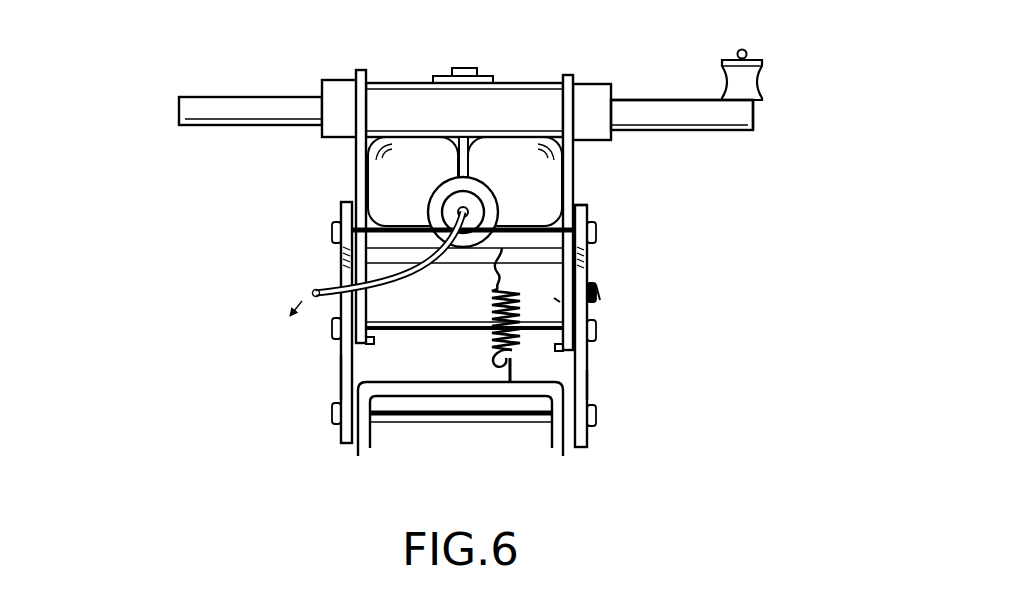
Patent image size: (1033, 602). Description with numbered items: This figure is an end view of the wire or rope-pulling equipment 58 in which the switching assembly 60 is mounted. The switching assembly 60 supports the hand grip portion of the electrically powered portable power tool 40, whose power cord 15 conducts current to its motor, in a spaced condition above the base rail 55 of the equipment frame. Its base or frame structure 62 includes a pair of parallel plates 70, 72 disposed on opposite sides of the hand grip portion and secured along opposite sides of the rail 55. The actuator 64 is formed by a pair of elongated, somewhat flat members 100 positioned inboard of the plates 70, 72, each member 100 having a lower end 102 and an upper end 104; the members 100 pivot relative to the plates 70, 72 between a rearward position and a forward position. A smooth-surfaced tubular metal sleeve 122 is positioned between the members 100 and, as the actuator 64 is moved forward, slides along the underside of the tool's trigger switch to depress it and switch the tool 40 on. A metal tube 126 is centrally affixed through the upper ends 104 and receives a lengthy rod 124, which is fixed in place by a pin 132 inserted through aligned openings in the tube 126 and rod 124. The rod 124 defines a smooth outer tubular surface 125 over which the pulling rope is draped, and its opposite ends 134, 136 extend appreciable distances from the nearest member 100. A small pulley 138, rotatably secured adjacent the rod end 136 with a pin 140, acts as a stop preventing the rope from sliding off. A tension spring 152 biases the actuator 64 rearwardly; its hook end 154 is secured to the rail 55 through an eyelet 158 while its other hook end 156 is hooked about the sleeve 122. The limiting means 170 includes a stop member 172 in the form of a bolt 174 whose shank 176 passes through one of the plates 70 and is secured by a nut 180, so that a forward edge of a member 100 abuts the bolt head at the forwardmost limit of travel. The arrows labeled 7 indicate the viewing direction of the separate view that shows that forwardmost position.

The section line of FIG. 7 is at (467, 70).
The power cord 15 is at (318, 290).
The electrically-powered portable power tool 40 is at (440, 200).
The base rail 55 is at (566, 396).
The wire or rope-pulling equipment 58 is at (580, 197).
The switching assembly 60 is at (708, 239).
The base or frame structure 62 is at (720, 299).
The actuator 64 is at (353, 80).
The plate 70 is at (340, 365).
The plate 72 is at (588, 374).
The elongated member 100 is at (372, 150).
The lower end 102 is at (368, 342).
The upper end 104 is at (366, 75).
The tubular metal sleeve 122 is at (365, 222).
The rod 124 is at (679, 131).
The smooth outer tubular surface 125 is at (656, 100).
The metal tube 126 is at (515, 83).
The pin 132 is at (472, 68).
The rod end 134 is at (238, 97).
The rod end 136 is at (736, 131).
The small pulley 138 is at (764, 76).
The pin 140 is at (741, 49).
The tension spring 152 is at (490, 316).
The spring end 154 is at (513, 365).
The spring end 156 is at (496, 280).
The eyelet 158 is at (494, 362).
The limiting means 170 is at (337, 240).
The stop member 172 is at (554, 300).
The bolt 174 is at (598, 294).
The shank 176 is at (597, 292).
The nut 180 is at (590, 282).